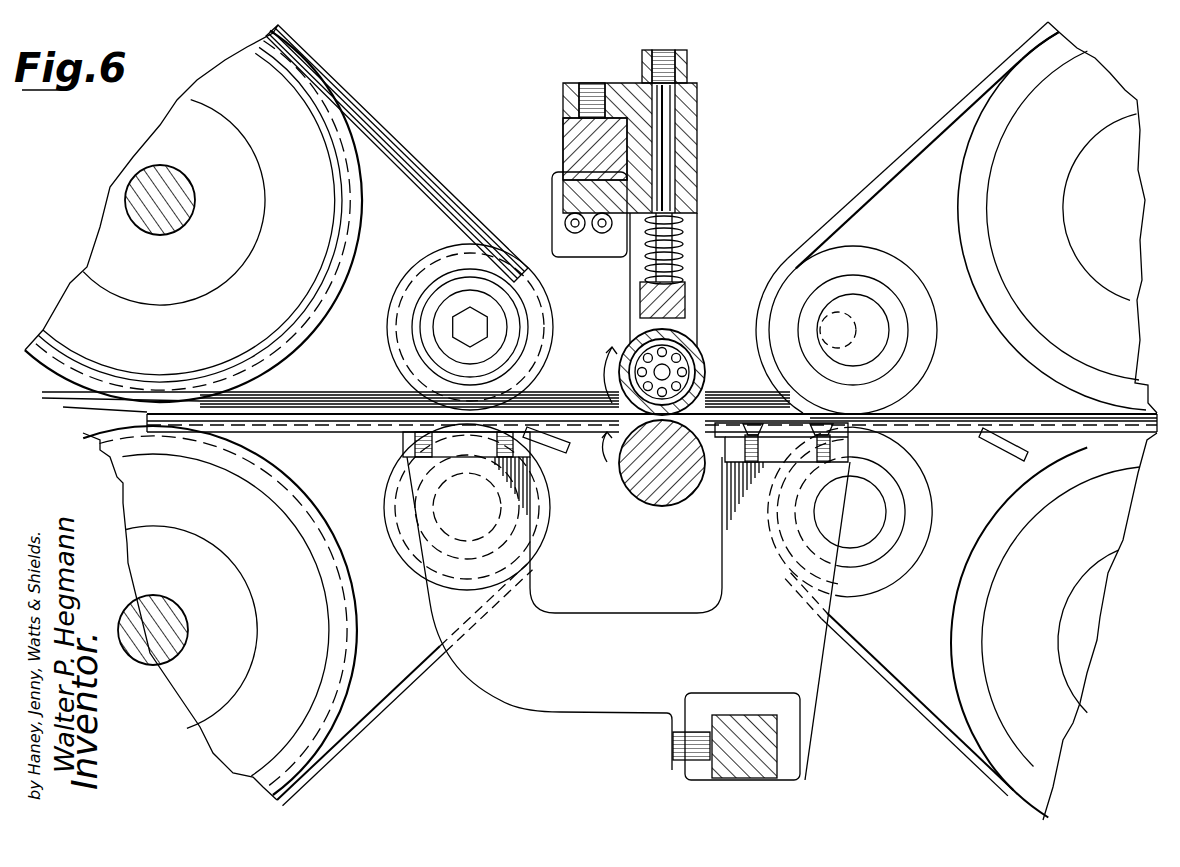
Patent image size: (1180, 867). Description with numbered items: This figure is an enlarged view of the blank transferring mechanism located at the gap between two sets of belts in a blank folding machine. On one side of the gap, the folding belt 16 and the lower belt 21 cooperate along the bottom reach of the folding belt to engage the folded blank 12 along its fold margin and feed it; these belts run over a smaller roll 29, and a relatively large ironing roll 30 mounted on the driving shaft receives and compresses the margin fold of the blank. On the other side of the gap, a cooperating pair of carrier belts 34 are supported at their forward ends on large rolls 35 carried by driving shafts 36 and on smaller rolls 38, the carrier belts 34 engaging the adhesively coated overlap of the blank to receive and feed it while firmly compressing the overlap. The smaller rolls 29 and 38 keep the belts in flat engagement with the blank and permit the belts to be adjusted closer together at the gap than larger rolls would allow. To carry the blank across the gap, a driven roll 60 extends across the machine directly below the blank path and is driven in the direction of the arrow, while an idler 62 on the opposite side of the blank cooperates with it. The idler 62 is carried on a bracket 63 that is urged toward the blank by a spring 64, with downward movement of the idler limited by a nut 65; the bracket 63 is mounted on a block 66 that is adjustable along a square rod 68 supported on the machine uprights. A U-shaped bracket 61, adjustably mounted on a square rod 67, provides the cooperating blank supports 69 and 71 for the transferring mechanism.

The blank 12 is at (550, 413).
The folding belt 16 is at (848, 213).
The lower belt 21 is at (945, 727).
The smaller roll 29 is at (913, 373).
The ironing roll 30 is at (1003, 220).
The carrier belt 34 is at (384, 119).
The large roll 35 is at (353, 246).
The driving shaft 36 is at (192, 206).
The smaller roll 38 is at (405, 366).
The driven roll 60 is at (640, 487).
The U-shaped bracket 61 is at (527, 696).
The idler 62 is at (705, 363).
The bracket 63 is at (655, 301).
The spring 64 is at (682, 240).
The nut 65 is at (688, 75).
The block 66 is at (685, 150).
The square rod 67 is at (757, 770).
The square rod 68 is at (577, 153).
The blank support 69 is at (343, 430).
The blank support 71 is at (948, 430).